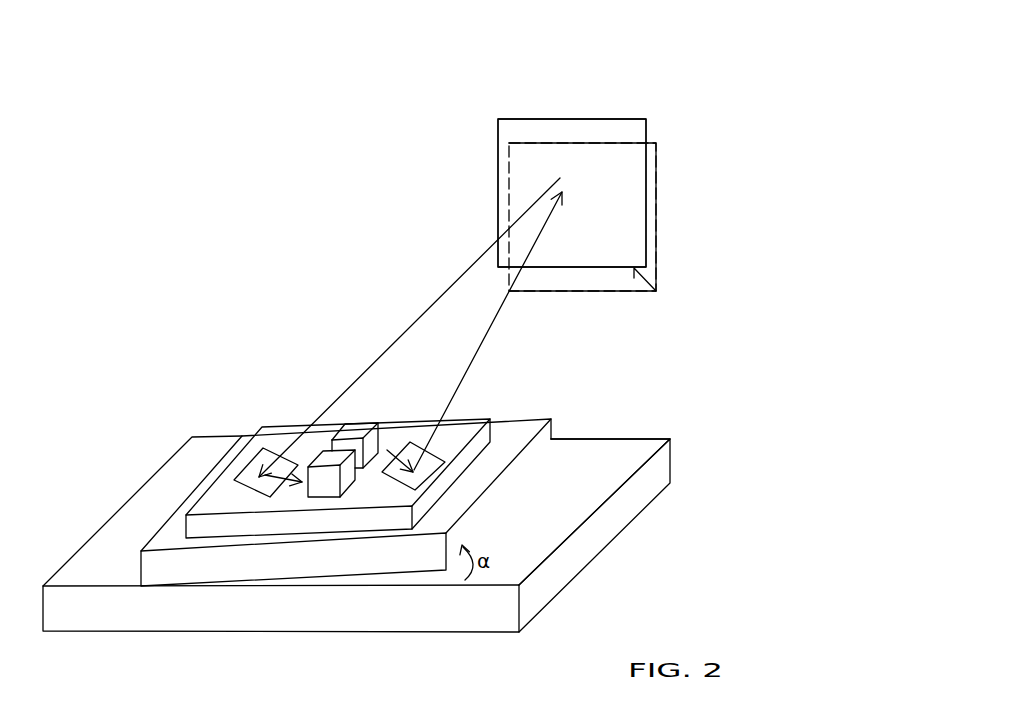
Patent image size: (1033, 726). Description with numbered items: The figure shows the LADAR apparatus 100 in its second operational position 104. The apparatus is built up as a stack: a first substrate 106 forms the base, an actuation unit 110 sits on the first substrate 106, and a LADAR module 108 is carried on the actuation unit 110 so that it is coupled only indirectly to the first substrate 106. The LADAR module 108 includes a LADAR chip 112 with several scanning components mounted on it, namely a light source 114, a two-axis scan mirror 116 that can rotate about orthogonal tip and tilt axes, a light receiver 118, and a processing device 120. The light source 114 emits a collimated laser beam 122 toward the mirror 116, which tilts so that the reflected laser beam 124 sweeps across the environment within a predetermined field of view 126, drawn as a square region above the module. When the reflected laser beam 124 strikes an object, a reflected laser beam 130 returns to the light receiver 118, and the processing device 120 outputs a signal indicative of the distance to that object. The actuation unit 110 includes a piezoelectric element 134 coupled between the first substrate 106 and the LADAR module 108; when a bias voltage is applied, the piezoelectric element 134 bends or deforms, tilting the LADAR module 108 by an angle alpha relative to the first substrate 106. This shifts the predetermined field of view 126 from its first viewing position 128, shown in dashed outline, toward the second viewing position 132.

The LADAR apparatus 100 is at (164, 170).
The second operational position 104 is at (738, 240).
The first substrate 106 is at (670, 459).
The LADAR module 108 is at (273, 432).
The actuation unit 110 is at (508, 440).
The LADAR chip 112 is at (457, 432).
The light source 114 is at (358, 432).
The two-axis scan mirror 116 is at (412, 478).
The light receiver 118 is at (252, 473).
The processing device 120 is at (324, 457).
The laser beam 122 is at (388, 443).
The reflected laser beam 124 is at (492, 322).
The predetermined field of view 126 is at (575, 119).
The first viewing position 128 is at (676, 178).
The reflected laser beam 130 is at (432, 303).
The second viewing position 132 is at (607, 110).
The piezoelectric element 134 is at (537, 450).